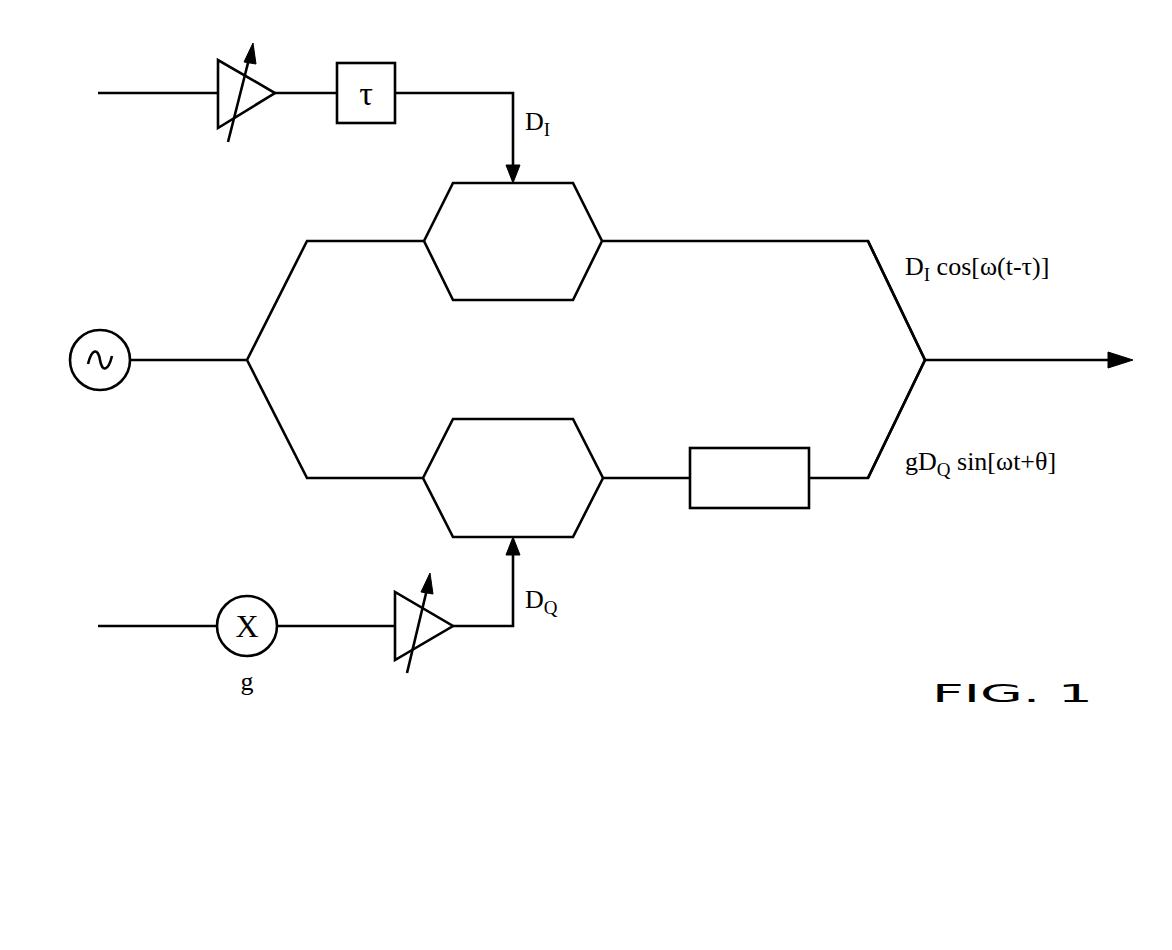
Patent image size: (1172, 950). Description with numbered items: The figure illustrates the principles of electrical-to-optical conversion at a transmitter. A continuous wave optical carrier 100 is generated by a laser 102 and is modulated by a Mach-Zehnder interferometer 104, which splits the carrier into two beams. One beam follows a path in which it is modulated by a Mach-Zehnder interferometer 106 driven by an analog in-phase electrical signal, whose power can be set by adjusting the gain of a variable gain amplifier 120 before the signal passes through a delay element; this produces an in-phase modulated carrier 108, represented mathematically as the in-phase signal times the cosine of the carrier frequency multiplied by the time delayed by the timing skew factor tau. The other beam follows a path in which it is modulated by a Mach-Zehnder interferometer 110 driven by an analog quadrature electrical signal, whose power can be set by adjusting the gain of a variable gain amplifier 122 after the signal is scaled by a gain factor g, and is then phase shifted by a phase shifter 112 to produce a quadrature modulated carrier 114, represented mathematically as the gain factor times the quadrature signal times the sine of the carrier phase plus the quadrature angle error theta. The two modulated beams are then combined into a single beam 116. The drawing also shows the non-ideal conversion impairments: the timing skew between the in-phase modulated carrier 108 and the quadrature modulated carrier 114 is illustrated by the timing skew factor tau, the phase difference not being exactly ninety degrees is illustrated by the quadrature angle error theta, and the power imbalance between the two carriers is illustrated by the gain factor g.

The continuous wave optical carrier 100 is at (157, 358).
The laser 102 is at (99, 330).
The Mach-Zehnder interferometer 104 is at (624, 371).
The Mach-Zehnder interferometer 106 is at (537, 254).
The in-phase modulated carrier 108 is at (889, 283).
The Mach-Zehnder interferometer 110 is at (537, 491).
The phase shifter 112 is at (750, 448).
The quadrature modulated carrier 114 is at (888, 433).
The single beam 116 is at (1015, 358).
The variable gain amplifier 120 is at (218, 79).
The variable gain amplifier 122 is at (393, 611).